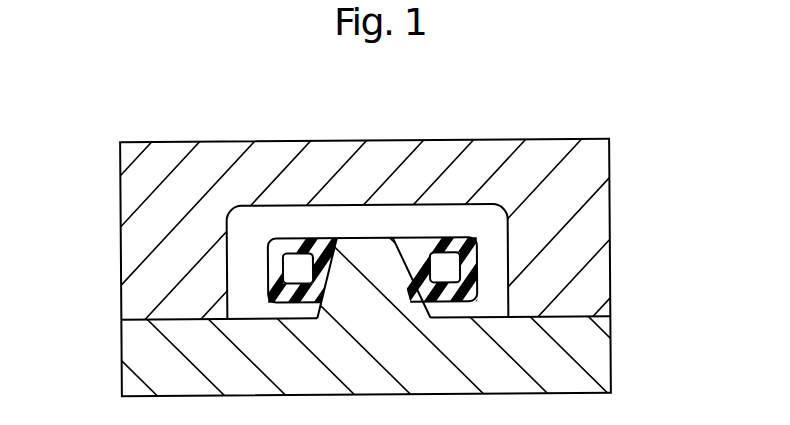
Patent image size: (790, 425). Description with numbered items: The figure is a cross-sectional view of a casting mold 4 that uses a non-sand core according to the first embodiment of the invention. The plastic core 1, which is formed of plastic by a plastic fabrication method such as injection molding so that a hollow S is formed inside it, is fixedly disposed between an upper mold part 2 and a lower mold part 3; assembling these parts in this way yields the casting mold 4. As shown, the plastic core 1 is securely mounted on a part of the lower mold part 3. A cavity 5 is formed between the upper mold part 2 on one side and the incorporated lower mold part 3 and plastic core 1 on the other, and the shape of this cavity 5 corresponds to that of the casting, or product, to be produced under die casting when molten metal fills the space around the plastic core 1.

The plastic core 1 is at (445, 242).
The upper mold part 2 is at (603, 219).
The lower mold part 3 is at (603, 359).
The casting mold 4 is at (114, 246).
The cavity 5 is at (305, 217).
The hollow S is at (453, 268).